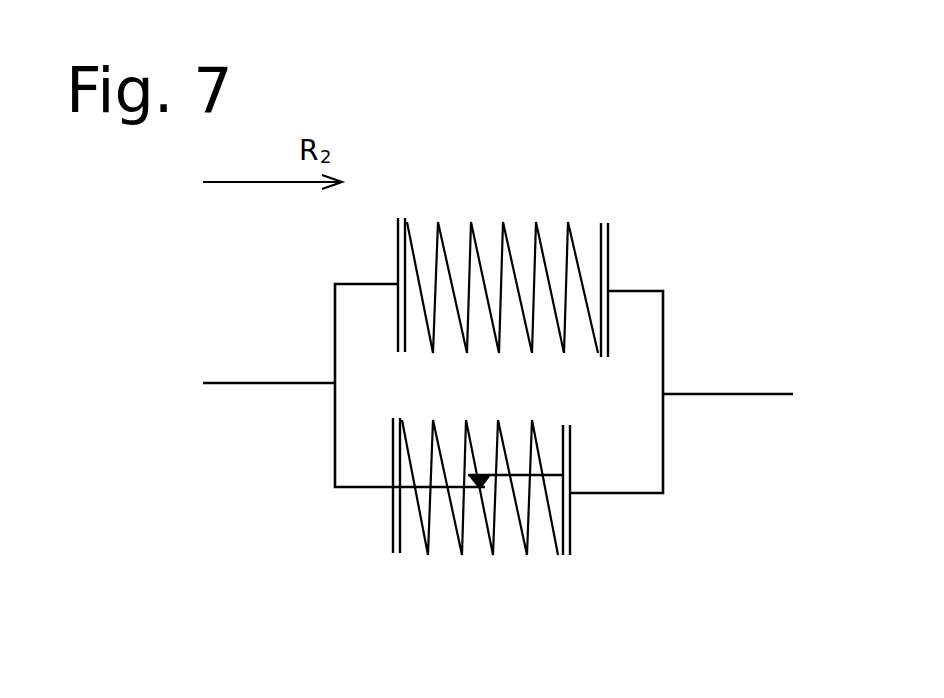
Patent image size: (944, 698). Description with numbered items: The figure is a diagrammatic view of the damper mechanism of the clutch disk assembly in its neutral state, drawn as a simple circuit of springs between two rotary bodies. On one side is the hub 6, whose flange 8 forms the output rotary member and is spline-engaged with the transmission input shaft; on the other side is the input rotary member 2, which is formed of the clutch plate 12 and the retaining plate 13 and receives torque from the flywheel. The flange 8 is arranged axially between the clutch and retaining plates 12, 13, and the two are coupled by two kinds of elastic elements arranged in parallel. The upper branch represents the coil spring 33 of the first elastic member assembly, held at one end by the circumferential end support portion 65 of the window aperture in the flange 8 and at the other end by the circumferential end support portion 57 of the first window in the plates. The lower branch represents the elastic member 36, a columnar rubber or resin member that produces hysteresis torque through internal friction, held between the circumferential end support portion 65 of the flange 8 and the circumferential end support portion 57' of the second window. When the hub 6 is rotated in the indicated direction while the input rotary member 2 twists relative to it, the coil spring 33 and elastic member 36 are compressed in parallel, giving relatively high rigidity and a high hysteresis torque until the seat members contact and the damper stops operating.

The input rotary member 2 is at (757, 349).
The clutch plate 12 is at (757, 349).
The retaining plate 13 is at (740, 392).
The hub 6 is at (269, 335).
The flange 8 is at (229, 382).
The coil spring 33 is at (499, 200).
The elastic member 36 is at (444, 562).
The circumferential end support portions 57 is at (617, 243).
The circumferential end support portions 57' is at (572, 544).
The circumferential end support portions 65 is at (398, 234).